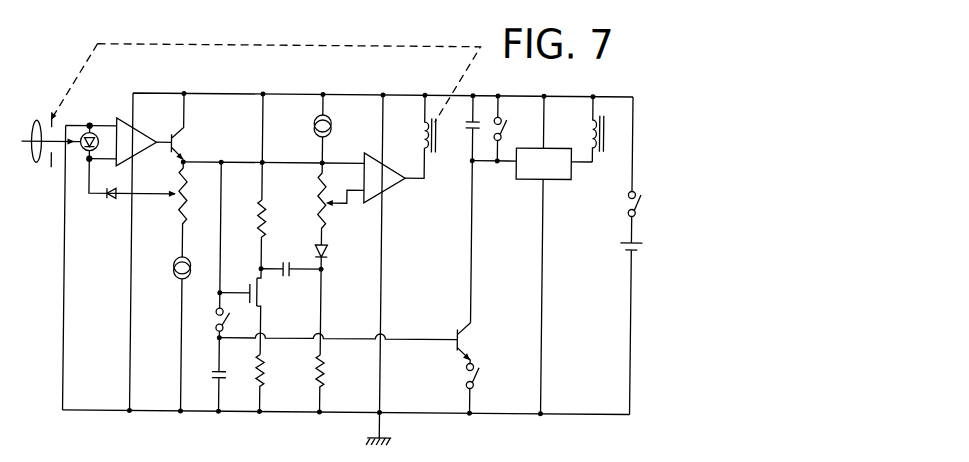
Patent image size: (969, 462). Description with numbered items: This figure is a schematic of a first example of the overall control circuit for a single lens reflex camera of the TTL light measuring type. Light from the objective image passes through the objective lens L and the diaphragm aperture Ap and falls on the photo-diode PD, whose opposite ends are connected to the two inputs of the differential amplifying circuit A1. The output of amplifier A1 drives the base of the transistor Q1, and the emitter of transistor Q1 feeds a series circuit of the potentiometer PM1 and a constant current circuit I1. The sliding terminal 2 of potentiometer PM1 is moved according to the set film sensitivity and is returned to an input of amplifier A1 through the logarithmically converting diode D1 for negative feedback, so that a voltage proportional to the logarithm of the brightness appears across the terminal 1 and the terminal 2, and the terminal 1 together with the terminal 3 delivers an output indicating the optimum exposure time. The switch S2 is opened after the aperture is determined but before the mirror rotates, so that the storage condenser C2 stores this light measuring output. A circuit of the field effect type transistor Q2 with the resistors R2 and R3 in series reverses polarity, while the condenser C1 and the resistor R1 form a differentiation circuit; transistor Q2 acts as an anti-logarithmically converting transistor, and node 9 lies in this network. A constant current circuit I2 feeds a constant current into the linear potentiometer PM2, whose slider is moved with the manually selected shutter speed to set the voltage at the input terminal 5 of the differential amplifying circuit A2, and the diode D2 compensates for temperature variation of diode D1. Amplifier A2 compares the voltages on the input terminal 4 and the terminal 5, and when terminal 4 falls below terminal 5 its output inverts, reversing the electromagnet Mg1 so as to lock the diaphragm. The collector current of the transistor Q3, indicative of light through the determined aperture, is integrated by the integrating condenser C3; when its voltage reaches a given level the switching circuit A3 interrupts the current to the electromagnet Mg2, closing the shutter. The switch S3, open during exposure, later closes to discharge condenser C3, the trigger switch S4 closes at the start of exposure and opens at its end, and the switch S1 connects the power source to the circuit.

The terminal 1 is at (431, 410).
The sliding terminal of potentiometer PM1 2 is at (152, 194).
The terminal 3 is at (210, 161).
The input terminal of amplifier A2 4 is at (344, 156).
The input terminal of amplifier A2 5 is at (344, 213).
The node between capacitor C1, diode D2 and resistor R1 9 is at (325, 272).
The objective lens L is at (51, 129).
The diaphragm aperture Ap is at (47, 154).
The photo-diode PD is at (93, 130).
The differential amplifying circuit A1 is at (144, 142).
The transistor Q1 is at (188, 126).
The logarithmically converting diode D1 is at (111, 205).
The potentiometer PM1 is at (182, 193).
The current source I1 is at (191, 334).
The constant current circuit I2 is at (333, 138).
The potentiometer PM2 is at (300, 204).
The resistor R2 is at (274, 234).
The condenser C1 is at (290, 257).
The diode D2 is at (333, 254).
The field effect type transistor Q2 is at (253, 311).
The switch S2 is at (207, 340).
The storage condenser C2 is at (230, 380).
The resistor R3 is at (273, 383).
The resistor R1 is at (331, 383).
The differential amplifying circuit A2 is at (394, 176).
The electromagnet Mg1 is at (411, 123).
The integrating condenser C3 is at (460, 208).
The switch S3 is at (512, 128).
The switching circuit A3 is at (553, 255).
The electromagnet Mg2 is at (578, 129).
The power switch S1 is at (642, 256).
The transistor Q3 is at (479, 343).
The trigger switch S4 is at (486, 388).